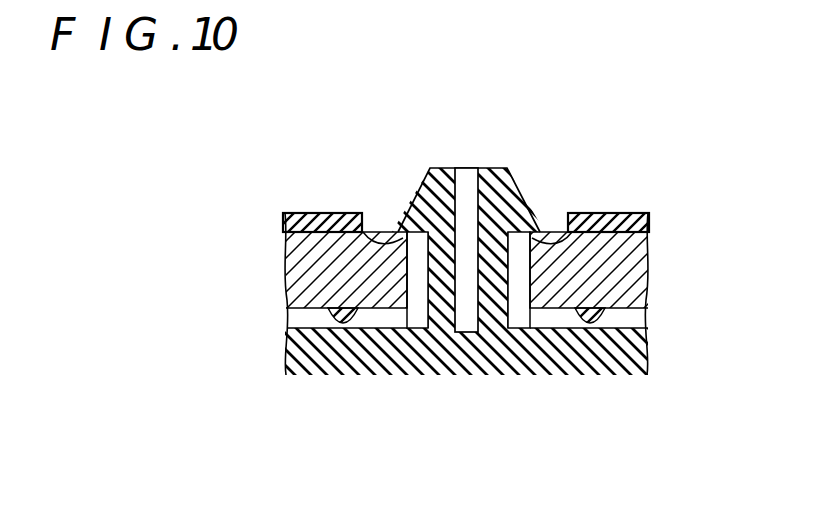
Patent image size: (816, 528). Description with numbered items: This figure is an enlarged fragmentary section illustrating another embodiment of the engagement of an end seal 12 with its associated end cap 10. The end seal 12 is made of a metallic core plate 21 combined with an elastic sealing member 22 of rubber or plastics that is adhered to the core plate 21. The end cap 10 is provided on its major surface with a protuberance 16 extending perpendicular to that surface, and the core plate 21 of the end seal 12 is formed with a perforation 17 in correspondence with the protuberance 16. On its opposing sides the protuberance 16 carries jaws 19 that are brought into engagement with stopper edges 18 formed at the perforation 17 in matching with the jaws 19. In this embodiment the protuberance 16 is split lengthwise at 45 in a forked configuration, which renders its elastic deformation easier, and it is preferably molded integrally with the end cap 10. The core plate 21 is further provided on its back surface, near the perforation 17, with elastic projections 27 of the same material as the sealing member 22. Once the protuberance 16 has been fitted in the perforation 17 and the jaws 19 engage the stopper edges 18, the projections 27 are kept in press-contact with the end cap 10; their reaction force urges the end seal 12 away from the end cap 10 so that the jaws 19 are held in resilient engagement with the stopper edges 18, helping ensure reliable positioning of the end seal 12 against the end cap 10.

The end cap 10 is at (445, 350).
The end seal 12 is at (291, 214).
The protuberance 16 is at (445, 188).
The perforation 17 is at (418, 268).
The stopper edge 18 is at (353, 219).
The jaw 19 is at (400, 232).
The core plate 21 is at (312, 281).
The elastic sealing member 22 is at (297, 214).
The elastic projection 27 is at (348, 316).
The lengthwise split 45 is at (480, 208).